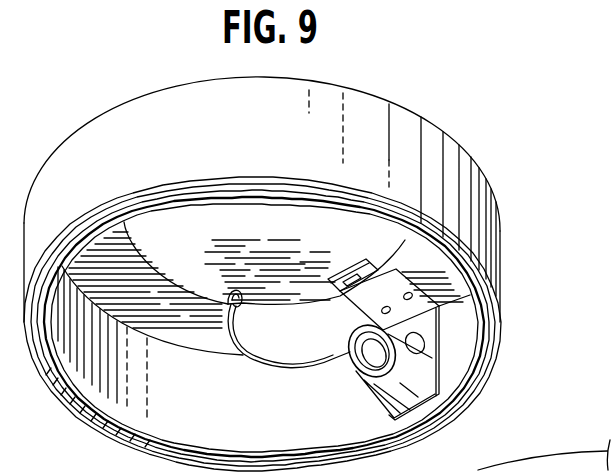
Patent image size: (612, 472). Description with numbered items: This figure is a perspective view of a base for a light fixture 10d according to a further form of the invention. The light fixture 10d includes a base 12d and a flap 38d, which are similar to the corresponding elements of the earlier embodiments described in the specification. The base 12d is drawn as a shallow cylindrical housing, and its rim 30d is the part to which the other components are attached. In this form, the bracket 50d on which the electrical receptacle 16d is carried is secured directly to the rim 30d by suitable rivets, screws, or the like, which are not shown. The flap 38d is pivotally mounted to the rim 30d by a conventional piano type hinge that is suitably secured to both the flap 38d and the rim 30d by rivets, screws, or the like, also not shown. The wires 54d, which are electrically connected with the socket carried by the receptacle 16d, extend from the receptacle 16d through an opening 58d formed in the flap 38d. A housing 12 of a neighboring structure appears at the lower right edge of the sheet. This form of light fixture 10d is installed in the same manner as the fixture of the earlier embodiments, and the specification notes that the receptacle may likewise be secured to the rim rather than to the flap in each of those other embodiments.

The light fixture 10d is at (525, 299).
The base 12d is at (474, 209).
The housing 12 is at (545, 442).
The flap 38d is at (177, 253).
The rim 30d is at (211, 372).
The opening 58d is at (229, 294).
The wires 54d is at (283, 380).
The bracket 50d is at (418, 303).
The electrical receptacle 16d is at (370, 397).